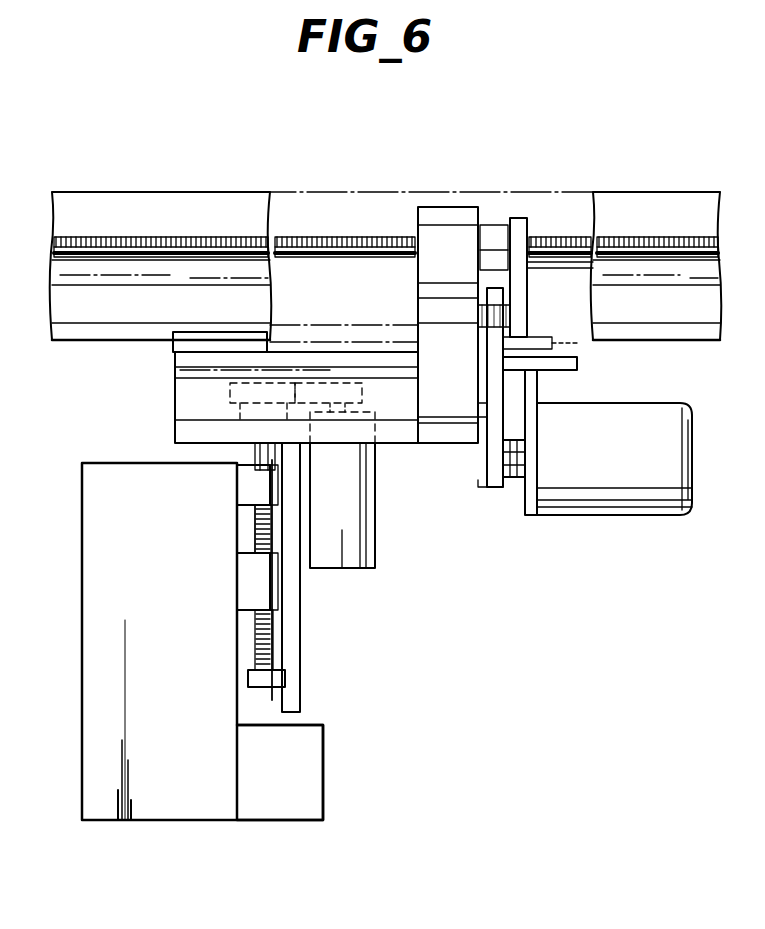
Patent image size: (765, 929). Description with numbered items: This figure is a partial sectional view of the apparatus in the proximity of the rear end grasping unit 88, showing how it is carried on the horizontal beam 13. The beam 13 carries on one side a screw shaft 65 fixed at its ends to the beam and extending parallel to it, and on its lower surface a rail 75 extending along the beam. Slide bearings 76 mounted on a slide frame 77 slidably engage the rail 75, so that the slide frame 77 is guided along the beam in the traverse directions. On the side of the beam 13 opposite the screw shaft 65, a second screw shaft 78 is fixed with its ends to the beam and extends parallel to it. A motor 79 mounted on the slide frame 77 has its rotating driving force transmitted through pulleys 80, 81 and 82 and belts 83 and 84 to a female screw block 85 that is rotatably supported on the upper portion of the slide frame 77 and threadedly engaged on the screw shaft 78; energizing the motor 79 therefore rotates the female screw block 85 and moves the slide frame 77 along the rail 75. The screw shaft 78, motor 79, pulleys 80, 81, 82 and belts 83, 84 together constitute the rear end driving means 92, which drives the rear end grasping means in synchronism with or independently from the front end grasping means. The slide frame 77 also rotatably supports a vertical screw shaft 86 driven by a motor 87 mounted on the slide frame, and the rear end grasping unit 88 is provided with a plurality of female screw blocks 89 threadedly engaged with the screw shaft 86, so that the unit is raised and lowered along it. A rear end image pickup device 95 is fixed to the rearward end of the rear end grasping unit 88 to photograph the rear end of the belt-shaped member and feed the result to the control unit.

The horizontal beam 13 is at (639, 200).
The screw shaft 65 is at (182, 235).
The rail 75 is at (70, 350).
The slide bearings 76 is at (175, 338).
The slide frame 77 is at (398, 445).
The screw shaft 78 is at (335, 239).
The motor 79 is at (645, 500).
The pulley 80 is at (486, 490).
The pulley 81 is at (527, 320).
The pulley 82 is at (527, 218).
The belt 83 is at (508, 393).
The belt 84 is at (528, 285).
The female screw block 85 is at (497, 237).
The vertical screw shaft 86 is at (256, 632).
The motor 87 is at (372, 558).
The rear end grasping unit 88 is at (82, 623).
The female screw blocks 89 is at (245, 487).
The rear end driving means 92 is at (535, 518).
The rear end image pickup device 95 is at (305, 772).